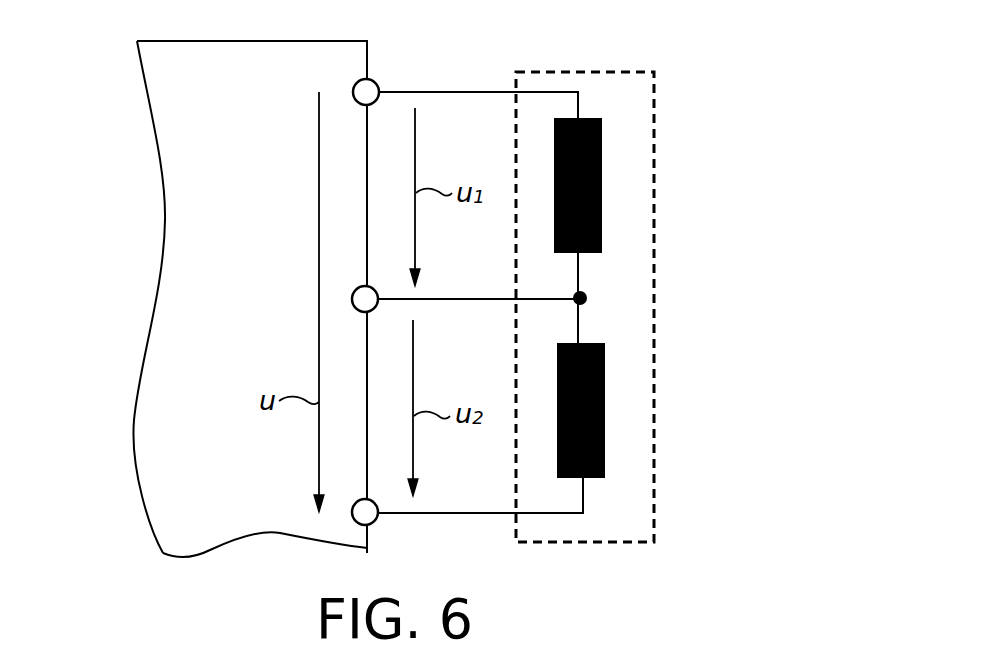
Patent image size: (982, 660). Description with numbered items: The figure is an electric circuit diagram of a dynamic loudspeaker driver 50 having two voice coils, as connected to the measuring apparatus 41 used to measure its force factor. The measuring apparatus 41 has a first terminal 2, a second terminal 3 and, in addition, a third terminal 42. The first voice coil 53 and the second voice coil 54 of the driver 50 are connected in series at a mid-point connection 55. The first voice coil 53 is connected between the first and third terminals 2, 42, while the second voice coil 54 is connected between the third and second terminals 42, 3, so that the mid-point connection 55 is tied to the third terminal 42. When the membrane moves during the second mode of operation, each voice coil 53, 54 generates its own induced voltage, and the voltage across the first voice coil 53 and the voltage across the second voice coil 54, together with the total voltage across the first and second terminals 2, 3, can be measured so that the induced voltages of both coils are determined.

The measuring apparatus 41 is at (72, 184).
The third terminal 42 is at (360, 296).
The first terminal 2 is at (373, 88).
The second terminal 3 is at (369, 516).
The dynamic loudspeaker driver 50 is at (694, 111).
The first voice coil 53 is at (602, 178).
The second voice coil 54 is at (605, 413).
The mid-point connection 55 is at (586, 293).